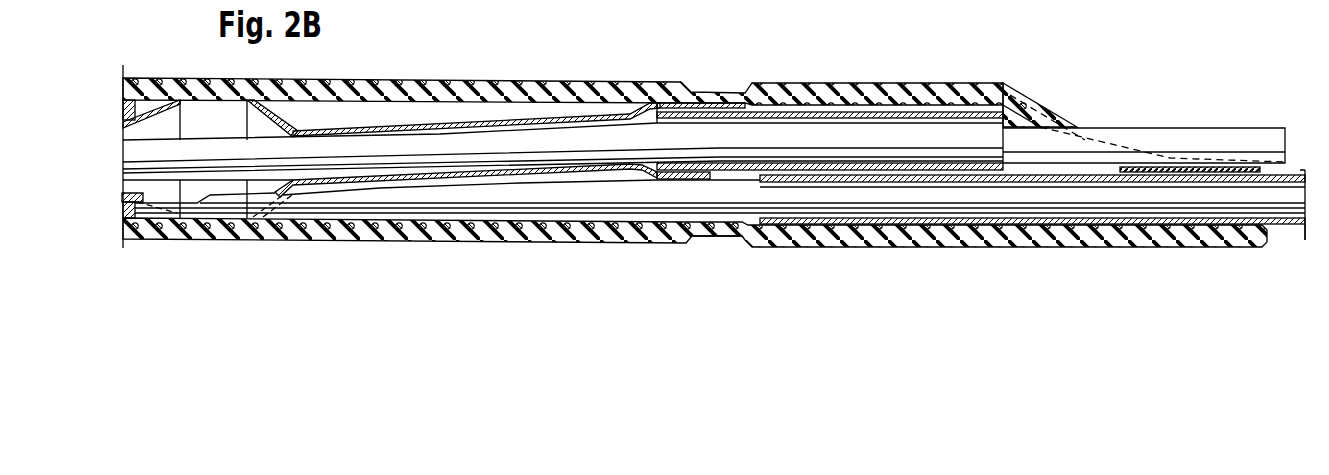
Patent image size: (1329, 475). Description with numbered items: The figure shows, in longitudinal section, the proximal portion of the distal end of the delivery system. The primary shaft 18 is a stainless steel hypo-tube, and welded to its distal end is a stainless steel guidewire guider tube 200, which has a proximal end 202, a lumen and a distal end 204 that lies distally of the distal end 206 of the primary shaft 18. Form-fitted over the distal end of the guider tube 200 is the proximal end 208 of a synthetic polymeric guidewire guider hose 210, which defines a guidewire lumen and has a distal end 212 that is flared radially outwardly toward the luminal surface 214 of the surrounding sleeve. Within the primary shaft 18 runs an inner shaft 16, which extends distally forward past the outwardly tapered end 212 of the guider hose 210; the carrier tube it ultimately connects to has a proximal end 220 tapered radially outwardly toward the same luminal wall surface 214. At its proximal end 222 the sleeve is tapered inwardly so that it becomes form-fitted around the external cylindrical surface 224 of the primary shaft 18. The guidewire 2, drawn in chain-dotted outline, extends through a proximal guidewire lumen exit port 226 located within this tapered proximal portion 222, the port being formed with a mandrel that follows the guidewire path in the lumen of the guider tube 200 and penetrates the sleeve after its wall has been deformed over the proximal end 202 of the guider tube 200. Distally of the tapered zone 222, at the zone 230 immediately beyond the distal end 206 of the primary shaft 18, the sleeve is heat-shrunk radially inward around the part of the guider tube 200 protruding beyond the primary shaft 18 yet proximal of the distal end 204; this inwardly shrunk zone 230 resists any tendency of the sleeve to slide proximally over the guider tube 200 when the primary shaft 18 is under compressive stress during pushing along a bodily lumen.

The guidewire 2 is at (1187, 136).
The inner shaft 16 is at (1068, 200).
The primary shaft 18 is at (1278, 233).
The guidewire guider tube 200 is at (822, 118).
The proximal end of guider tube 202 is at (1013, 113).
The distal end of guider tube 204 is at (622, 92).
The distal end of primary shaft 206 is at (742, 238).
The proximal end of guider hose 208 is at (688, 178).
The guidewire guider hose 210 is at (524, 170).
The distal end of guider hose 212 is at (281, 118).
The luminal surface of sleeve 214 is at (422, 90).
The proximal end of carrier tube 220 is at (152, 110).
The proximal end of sleeve 222 is at (1167, 238).
The external cylindrical surface of primary shaft 224 is at (1296, 170).
The proximal guidewire lumen exit port 226 is at (1073, 128).
The inwardly shrunk zone 230 is at (703, 233).